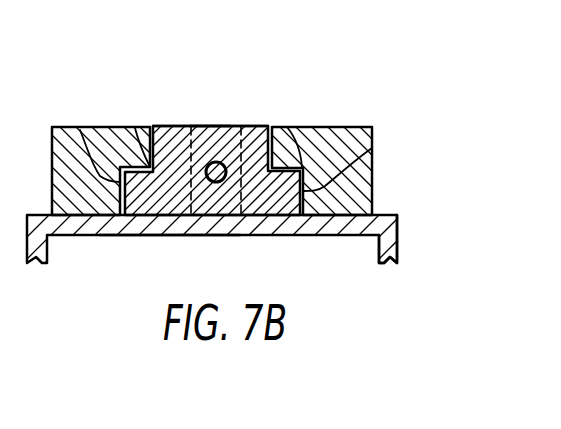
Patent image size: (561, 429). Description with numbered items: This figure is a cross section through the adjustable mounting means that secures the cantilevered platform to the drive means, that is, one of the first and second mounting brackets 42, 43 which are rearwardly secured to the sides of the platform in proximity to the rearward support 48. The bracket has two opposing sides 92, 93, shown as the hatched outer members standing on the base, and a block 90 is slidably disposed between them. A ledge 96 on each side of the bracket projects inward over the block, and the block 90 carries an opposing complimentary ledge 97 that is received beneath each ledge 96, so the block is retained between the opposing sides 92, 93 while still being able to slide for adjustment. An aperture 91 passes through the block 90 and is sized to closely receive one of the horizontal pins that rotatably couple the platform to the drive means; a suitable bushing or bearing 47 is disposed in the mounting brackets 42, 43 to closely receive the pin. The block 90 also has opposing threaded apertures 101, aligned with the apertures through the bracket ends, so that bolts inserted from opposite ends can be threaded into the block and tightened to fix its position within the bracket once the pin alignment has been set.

The first mounting bracket 42 is at (208, 112).
The second mounting bracket 43 is at (210, 113).
The bushing or bearing 47 is at (253, 235).
The rearward support 48 is at (394, 215).
The block 90 is at (253, 127).
The aperture 91 is at (160, 235).
The opposing side 92 is at (108, 127).
The opposing side 93 is at (343, 127).
The ledge 96 is at (135, 128).
The complimentary ledge 97 is at (80, 130).
The threaded aperture 101 is at (207, 163).